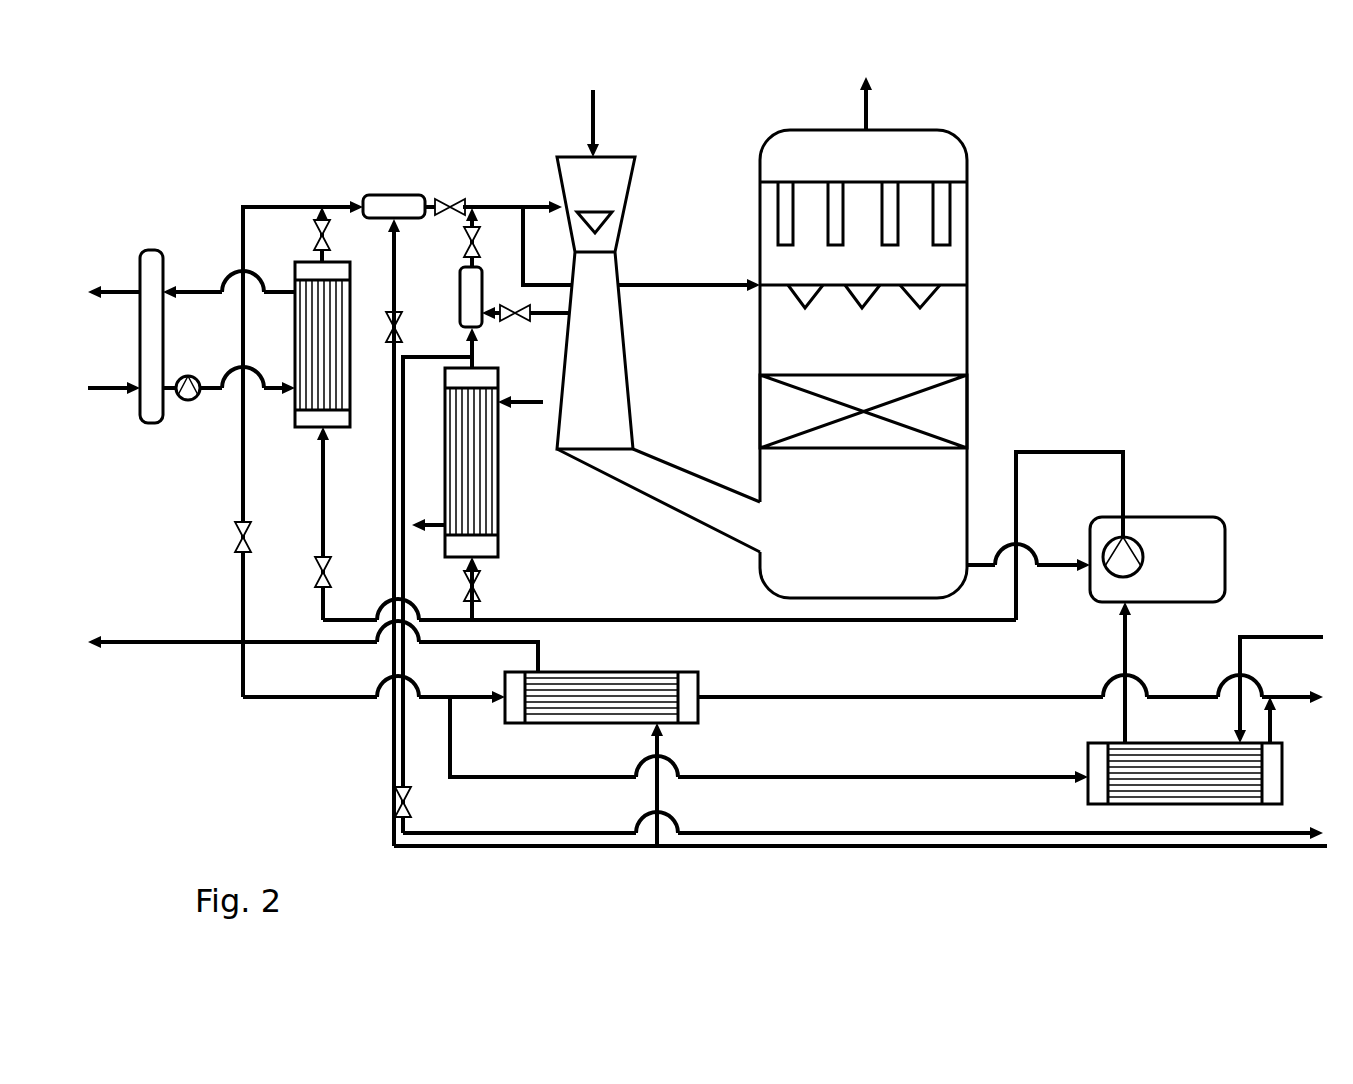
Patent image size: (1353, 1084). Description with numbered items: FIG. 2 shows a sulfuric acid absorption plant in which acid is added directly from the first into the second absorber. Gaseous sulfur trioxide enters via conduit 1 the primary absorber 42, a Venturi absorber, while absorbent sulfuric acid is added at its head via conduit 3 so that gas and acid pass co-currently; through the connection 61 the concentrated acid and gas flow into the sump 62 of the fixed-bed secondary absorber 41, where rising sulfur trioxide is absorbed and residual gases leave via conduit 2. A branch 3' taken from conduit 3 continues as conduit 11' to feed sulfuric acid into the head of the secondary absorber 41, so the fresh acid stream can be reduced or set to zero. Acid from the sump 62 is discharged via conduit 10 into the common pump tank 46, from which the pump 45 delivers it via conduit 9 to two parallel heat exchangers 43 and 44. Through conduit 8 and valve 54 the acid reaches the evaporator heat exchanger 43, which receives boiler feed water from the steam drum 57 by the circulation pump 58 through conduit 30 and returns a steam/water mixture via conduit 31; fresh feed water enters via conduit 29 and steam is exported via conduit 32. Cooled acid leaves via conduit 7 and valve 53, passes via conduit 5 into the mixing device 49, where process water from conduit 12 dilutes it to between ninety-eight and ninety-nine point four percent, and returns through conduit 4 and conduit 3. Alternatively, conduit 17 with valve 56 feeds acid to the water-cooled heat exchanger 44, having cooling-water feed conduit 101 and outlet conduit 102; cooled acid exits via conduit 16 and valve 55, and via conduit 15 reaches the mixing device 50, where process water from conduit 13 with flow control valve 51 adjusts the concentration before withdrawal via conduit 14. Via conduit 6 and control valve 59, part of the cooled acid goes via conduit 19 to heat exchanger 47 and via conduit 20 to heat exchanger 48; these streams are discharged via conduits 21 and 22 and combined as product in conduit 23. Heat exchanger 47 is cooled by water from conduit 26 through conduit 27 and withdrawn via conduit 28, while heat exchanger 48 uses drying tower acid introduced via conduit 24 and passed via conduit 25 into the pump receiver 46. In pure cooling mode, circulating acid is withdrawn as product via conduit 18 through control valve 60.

The conduit 1 is at (590, 112).
The conduit 2 is at (870, 98).
The conduit 3 is at (512, 184).
The scrubbing liquid branch line 3' is at (547, 220).
The conduit 4 is at (428, 205).
The conduit 5 is at (340, 205).
The conduit 6 is at (275, 205).
The conduit 7 is at (325, 255).
The conduit 8 is at (321, 490).
The conduit 9 is at (1062, 450).
The conduit 10 is at (984, 563).
The conduit 11' is at (689, 260).
The conduit 12 is at (392, 490).
The conduit 13 is at (548, 320).
The conduit 14 is at (460, 260).
The conduit 15 is at (470, 348).
The conduit 16 is at (474, 360).
The conduit 17 is at (474, 612).
The conduit 18 is at (860, 831).
The conduit 19 is at (475, 695).
The conduit 20 is at (752, 775).
The conduit 21 is at (862, 695).
The conduit 22 is at (1274, 733).
The conduit 23 is at (1290, 695).
The conduit 24 is at (1278, 635).
The conduit 25 is at (1123, 637).
The conduit 26 is at (862, 850).
The conduit 27 is at (659, 800).
The conduit 28 is at (188, 640).
The conduit 29 is at (102, 395).
The conduit 30 is at (213, 380).
The outlet conduit 31 is at (195, 285).
The conduit 32 is at (112, 283).
The secondary absorber 41 is at (969, 405).
The primary absorber 42 is at (622, 310).
The heat exchanger 43 is at (293, 320).
The heat exchanger 44 is at (500, 507).
The pump 45 is at (1102, 549).
The pump tank 46 is at (1182, 517).
The heat exchanger 47 is at (622, 670).
The heat exchanger 48 is at (1284, 775).
The mixing device 49 is at (393, 193).
The mixing device 50 is at (458, 302).
The flow control valve 51 is at (515, 300).
The shut-off or control valve 53 is at (314, 235).
The shut-off or control valve 54 is at (316, 572).
The shut-off or control valve 55 is at (480, 243).
The shut-off or flow control valve 56 is at (448, 200).
The steam drum 57 is at (165, 320).
The circulation pump 58 is at (188, 400).
The control valve 59 is at (236, 535).
The control valve 60 is at (410, 802).
The connection 61 is at (639, 493).
The sump 62 is at (883, 578).
The feed conduit 101 is at (525, 405).
The outlet conduit 102 is at (428, 522).